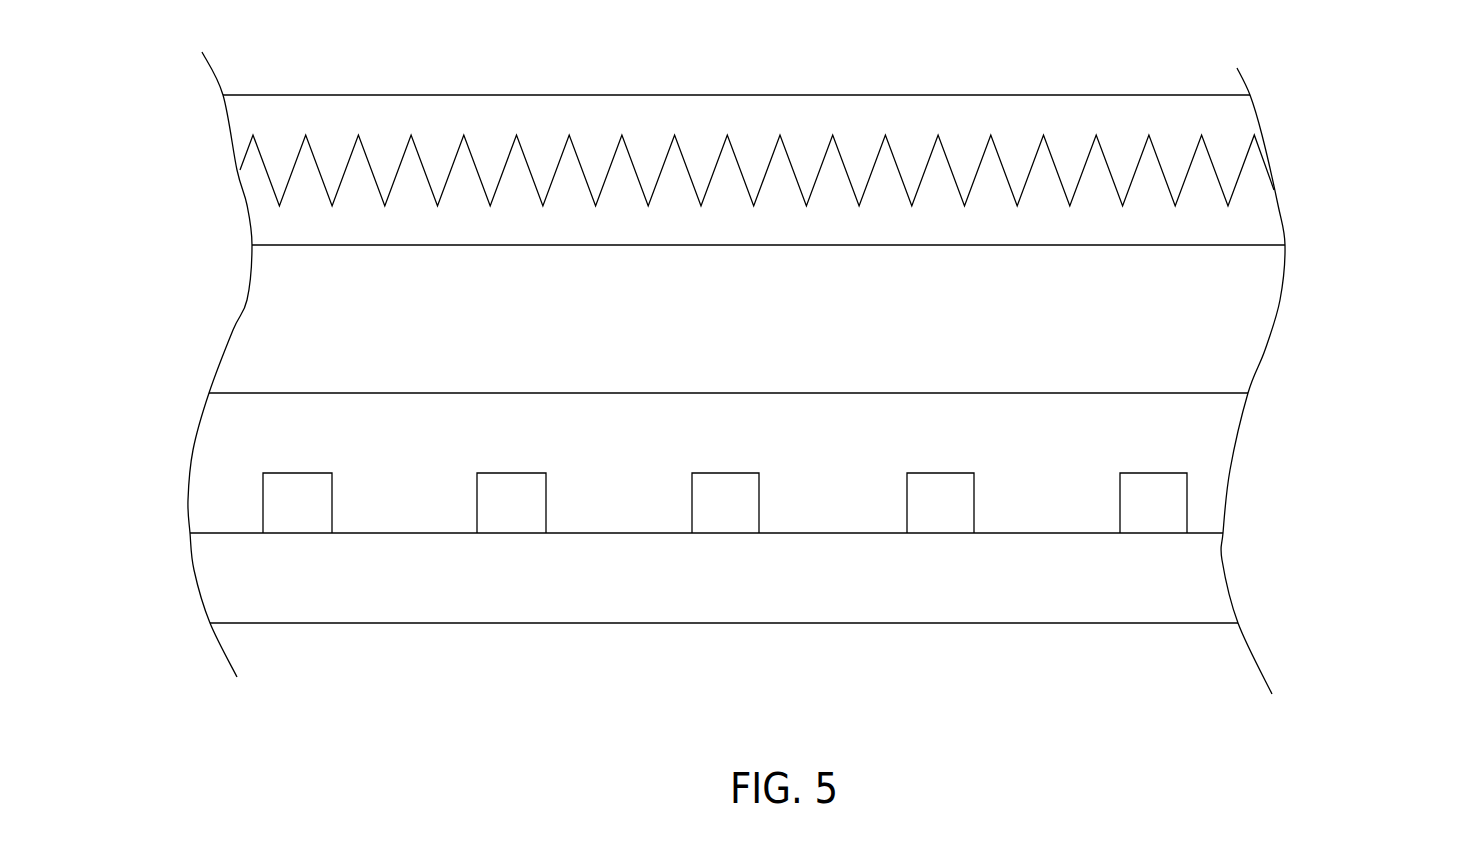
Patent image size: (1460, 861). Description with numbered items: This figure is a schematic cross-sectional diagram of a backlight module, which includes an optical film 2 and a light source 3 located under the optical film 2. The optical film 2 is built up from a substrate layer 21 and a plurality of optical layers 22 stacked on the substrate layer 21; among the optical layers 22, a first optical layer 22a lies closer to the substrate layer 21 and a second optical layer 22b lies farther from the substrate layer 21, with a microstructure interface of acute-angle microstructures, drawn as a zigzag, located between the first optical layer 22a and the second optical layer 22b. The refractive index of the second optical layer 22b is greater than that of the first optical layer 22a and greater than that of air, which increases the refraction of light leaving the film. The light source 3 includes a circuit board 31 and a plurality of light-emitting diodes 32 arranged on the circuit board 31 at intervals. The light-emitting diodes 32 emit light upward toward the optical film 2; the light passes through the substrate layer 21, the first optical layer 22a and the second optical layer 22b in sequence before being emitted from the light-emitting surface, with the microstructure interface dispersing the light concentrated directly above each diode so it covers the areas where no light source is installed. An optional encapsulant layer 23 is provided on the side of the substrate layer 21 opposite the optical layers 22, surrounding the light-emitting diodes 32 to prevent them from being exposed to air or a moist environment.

The optical film 2 is at (203, 103).
The light source 3 is at (258, 654).
The substrate layer 21 is at (1255, 337).
The optical layers 22 is at (841, 164).
The first optical layer 22a is at (1278, 230).
The second optical layer 22b is at (1250, 120).
The encapsulant layer 23 is at (1210, 460).
The circuit board 31 is at (602, 612).
The light-emitting diodes 32 is at (532, 498).